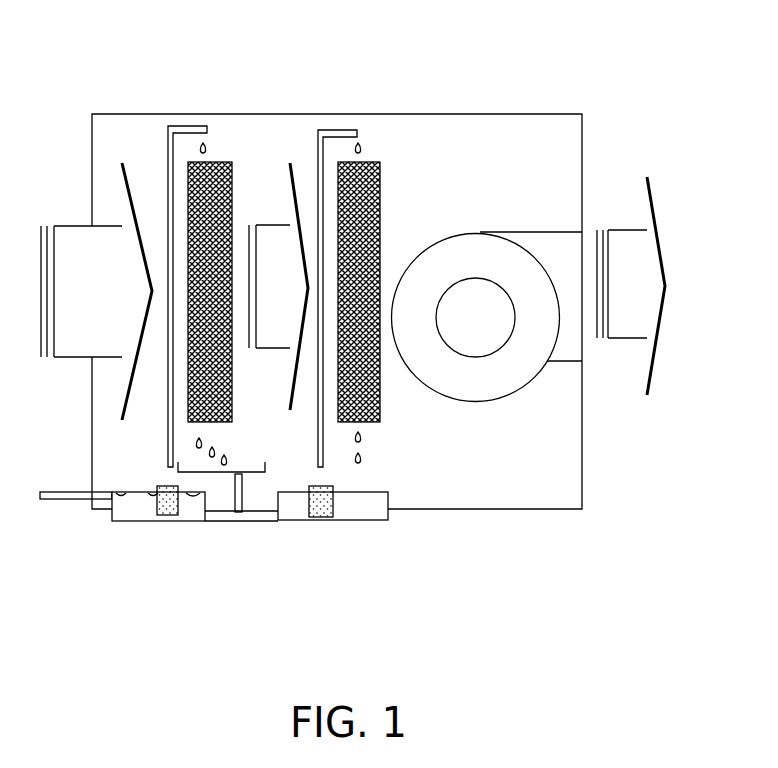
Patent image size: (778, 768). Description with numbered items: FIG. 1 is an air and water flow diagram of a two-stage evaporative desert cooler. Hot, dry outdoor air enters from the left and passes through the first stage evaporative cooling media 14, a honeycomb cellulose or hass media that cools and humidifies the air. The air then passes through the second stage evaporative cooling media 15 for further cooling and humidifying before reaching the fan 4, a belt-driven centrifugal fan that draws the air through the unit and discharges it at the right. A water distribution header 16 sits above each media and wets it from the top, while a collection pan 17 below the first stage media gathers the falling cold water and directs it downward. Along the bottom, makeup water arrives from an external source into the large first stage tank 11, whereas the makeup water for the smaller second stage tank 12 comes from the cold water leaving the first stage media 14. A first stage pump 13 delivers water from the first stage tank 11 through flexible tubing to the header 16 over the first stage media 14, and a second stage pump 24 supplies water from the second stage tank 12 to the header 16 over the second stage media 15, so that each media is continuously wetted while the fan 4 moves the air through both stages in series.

The fan 4 is at (487, 235).
The first stage tank 11 is at (133, 515).
The second stage tank 12 is at (353, 510).
The first stage pump 13 is at (165, 517).
The first stage evaporative cooling media 14 is at (222, 170).
The second stage evaporative cooling media 15 is at (383, 160).
The water distribution header 16 is at (188, 123).
The water collection pan 17 is at (240, 513).
The second stage pump 24 is at (320, 520).